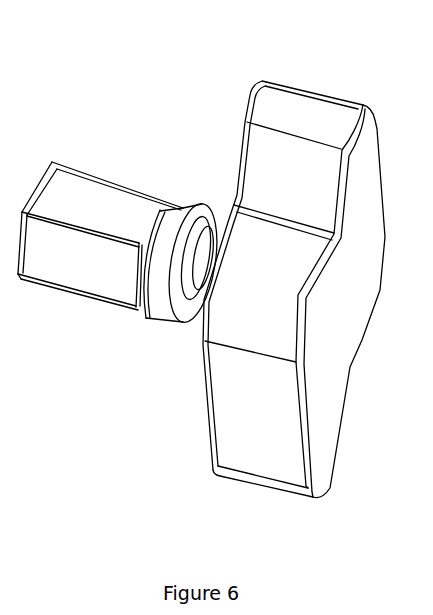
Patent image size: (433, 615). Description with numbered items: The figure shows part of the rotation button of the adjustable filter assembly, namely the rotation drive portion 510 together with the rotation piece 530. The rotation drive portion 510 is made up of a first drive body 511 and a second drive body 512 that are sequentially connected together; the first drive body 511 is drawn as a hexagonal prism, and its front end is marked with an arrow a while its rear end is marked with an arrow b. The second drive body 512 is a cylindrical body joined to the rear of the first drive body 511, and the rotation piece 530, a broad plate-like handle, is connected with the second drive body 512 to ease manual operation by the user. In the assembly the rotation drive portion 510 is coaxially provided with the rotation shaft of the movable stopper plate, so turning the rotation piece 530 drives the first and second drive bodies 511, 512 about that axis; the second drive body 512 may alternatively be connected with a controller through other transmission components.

The rotation drive portion 510 is at (225, 124).
The first drive body 511 is at (129, 181).
The second drive body 512 is at (217, 215).
The rotation piece 530 is at (313, 97).
The front end a is at (83, 322).
The rear end b is at (161, 333).